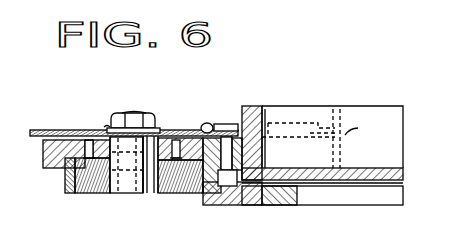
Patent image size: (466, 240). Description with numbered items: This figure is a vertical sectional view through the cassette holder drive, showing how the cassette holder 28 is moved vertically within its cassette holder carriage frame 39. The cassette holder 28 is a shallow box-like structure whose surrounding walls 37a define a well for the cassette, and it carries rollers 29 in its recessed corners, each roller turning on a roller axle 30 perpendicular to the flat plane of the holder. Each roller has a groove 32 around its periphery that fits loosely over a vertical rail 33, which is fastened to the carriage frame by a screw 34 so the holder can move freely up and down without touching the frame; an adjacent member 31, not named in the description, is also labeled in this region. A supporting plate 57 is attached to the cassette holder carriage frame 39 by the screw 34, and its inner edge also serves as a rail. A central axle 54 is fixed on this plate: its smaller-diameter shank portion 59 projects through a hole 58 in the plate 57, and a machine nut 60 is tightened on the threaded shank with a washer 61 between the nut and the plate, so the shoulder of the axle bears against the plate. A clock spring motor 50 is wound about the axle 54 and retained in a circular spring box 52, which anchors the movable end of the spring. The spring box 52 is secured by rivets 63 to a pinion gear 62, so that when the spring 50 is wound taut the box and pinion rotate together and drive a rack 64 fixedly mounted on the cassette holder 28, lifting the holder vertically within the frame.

The cassette holder 28 is at (380, 186).
The rollers 29 is at (318, 125).
The roller axles 30 is at (290, 115).
The housing 31 is at (363, 127).
The groove 32 is at (340, 138).
The vertical rail 33 is at (226, 125).
The screw 34 is at (205, 124).
The walls 37a is at (265, 106).
The cassette holder carriage frame 39 is at (283, 205).
The clock spring motor 50 is at (88, 193).
The circular spring box 52 is at (67, 192).
The central axle 54 is at (118, 193).
The supporting plate 57 is at (62, 131).
The hole 58 is at (142, 113).
The shank portion 59 is at (127, 112).
The machine nut 60 is at (105, 127).
The washer 61 is at (108, 129).
The pinion gear 62 is at (44, 154).
The rivets 63 is at (66, 180).
The rack 64 is at (243, 205).